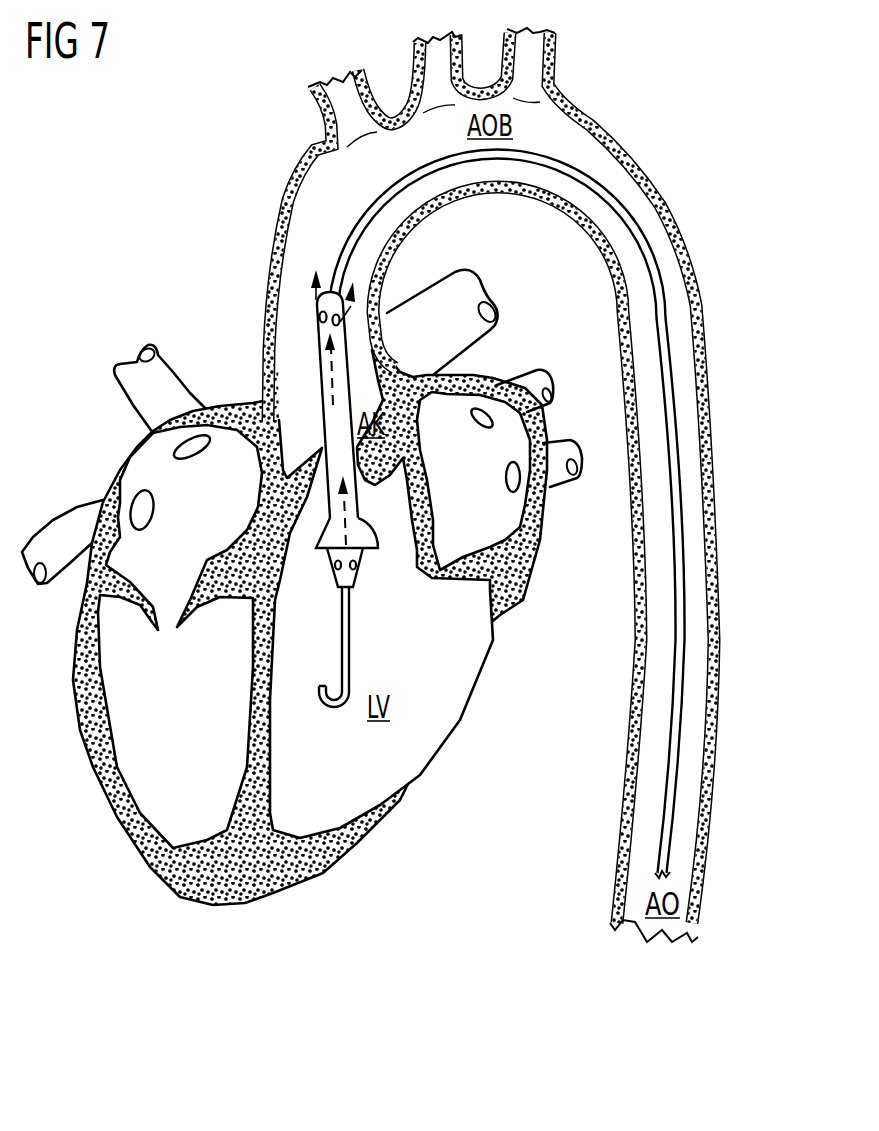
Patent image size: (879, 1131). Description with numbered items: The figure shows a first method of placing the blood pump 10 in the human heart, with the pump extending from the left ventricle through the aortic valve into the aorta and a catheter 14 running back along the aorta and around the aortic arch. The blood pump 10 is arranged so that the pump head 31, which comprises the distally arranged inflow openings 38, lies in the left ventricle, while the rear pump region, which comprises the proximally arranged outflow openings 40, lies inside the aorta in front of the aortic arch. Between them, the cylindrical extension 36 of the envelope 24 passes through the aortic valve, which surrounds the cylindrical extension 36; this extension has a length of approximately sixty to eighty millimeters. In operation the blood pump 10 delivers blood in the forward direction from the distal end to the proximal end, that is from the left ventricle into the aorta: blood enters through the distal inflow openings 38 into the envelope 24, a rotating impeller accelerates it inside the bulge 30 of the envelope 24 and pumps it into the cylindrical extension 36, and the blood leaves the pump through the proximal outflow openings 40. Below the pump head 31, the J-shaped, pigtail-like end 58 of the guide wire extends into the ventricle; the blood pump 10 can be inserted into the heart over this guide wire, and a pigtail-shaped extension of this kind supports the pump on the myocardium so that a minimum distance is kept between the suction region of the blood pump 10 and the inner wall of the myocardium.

The blood pump 10 is at (284, 359).
The catheter 14 is at (682, 563).
The envelope 24 is at (314, 340).
The bulge 30 is at (396, 514).
The pump head 31 is at (395, 560).
The cylindrical extension 36 is at (299, 410).
The inflow openings 38 is at (329, 580).
The outflow openings 40 is at (320, 311).
The end of the guide wire 58 is at (330, 727).